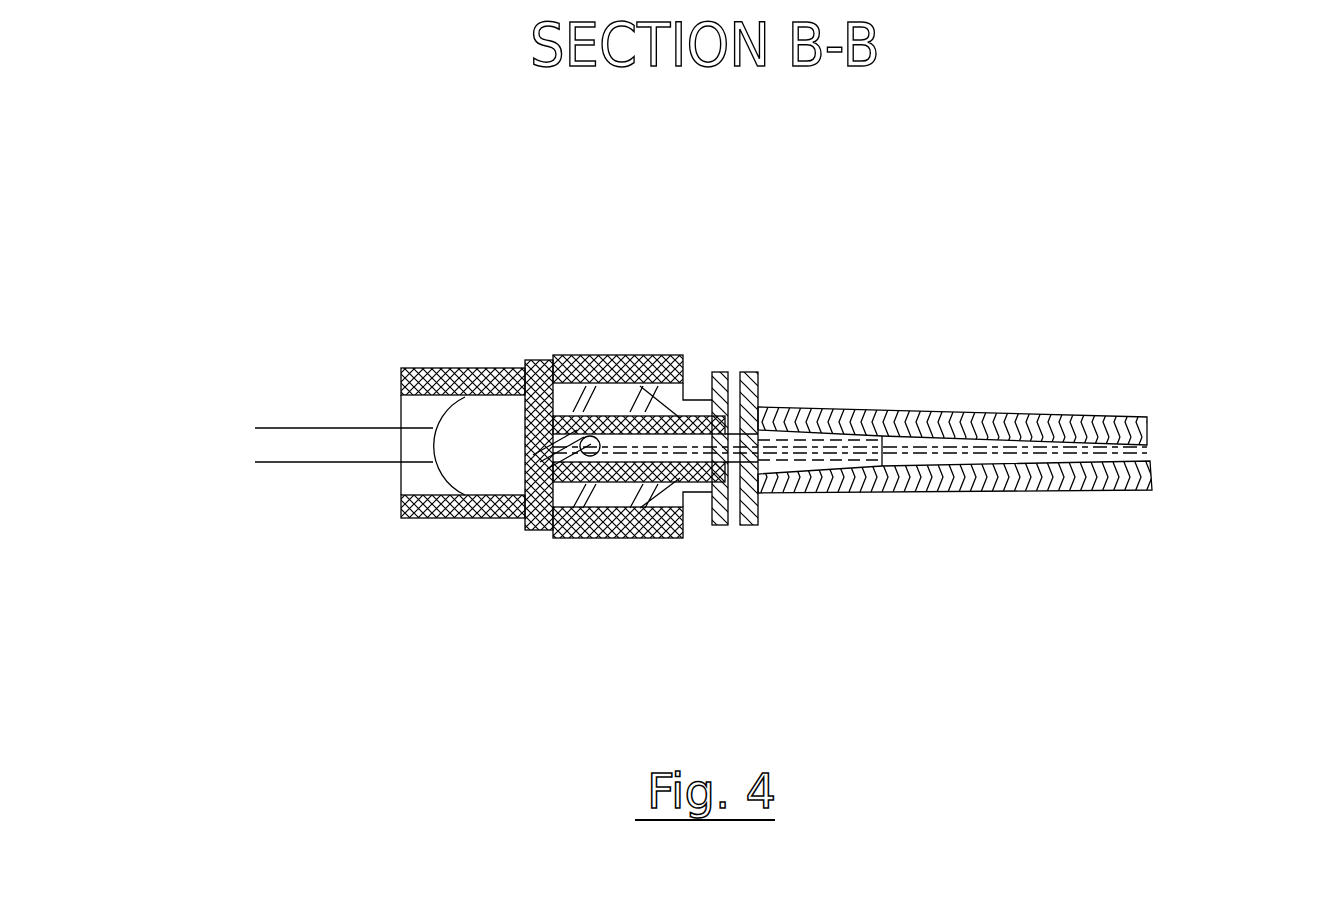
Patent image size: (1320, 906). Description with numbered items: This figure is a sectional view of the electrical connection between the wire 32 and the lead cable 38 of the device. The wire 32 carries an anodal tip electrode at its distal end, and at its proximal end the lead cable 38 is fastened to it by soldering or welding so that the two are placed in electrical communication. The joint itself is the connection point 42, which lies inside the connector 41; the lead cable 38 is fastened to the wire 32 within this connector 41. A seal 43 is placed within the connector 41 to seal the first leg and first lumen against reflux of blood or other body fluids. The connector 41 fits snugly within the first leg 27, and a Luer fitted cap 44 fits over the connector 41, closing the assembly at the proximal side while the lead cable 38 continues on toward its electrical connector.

The first leg 27 is at (1102, 417).
The wire 32 is at (697, 452).
The lead cable 38 is at (327, 460).
The connector 41 is at (730, 373).
The connection point 42 is at (597, 455).
The seal 43 is at (440, 482).
The Luer fitted cap 44 is at (490, 367).